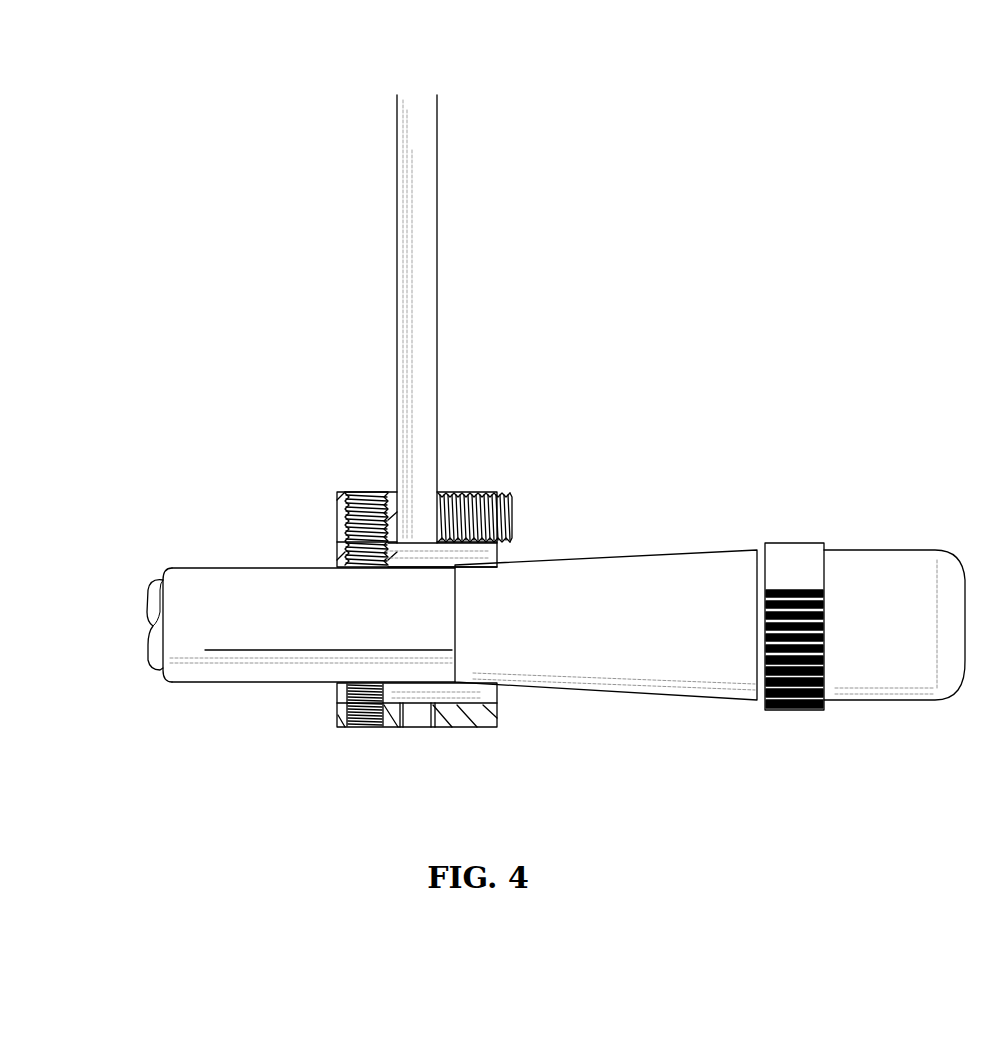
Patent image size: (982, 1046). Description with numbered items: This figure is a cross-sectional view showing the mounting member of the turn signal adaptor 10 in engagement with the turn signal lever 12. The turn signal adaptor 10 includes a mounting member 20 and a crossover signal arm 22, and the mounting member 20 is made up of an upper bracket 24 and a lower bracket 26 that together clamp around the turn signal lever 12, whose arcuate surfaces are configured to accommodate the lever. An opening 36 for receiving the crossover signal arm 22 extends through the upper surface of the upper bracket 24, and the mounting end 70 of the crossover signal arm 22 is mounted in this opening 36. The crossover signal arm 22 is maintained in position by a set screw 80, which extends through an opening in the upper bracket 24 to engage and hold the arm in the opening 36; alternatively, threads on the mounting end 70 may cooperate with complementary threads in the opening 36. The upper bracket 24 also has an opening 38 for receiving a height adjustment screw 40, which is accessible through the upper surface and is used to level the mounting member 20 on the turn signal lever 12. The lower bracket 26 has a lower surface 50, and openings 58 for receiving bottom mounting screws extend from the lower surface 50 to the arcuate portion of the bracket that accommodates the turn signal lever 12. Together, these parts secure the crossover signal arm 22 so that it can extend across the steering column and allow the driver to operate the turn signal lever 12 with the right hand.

The turn signal adaptor 10 is at (565, 340).
The turn signal lever 12 is at (244, 698).
The mounting member 20 is at (503, 462).
The crossover signal arm 22 is at (438, 258).
The upper bracket 24 is at (337, 530).
The lower bracket 26 is at (500, 717).
The opening for receiving the crossover signal arm 36 is at (430, 510).
The opening for receiving the height adjustment screw 38 is at (365, 492).
The height adjustment screw 40 is at (350, 492).
The lower surface 50 is at (470, 727).
The openings for receiving bottom mounting screws 58 is at (362, 727).
The mounting end 70 is at (418, 537).
The set screw 80 is at (514, 522).